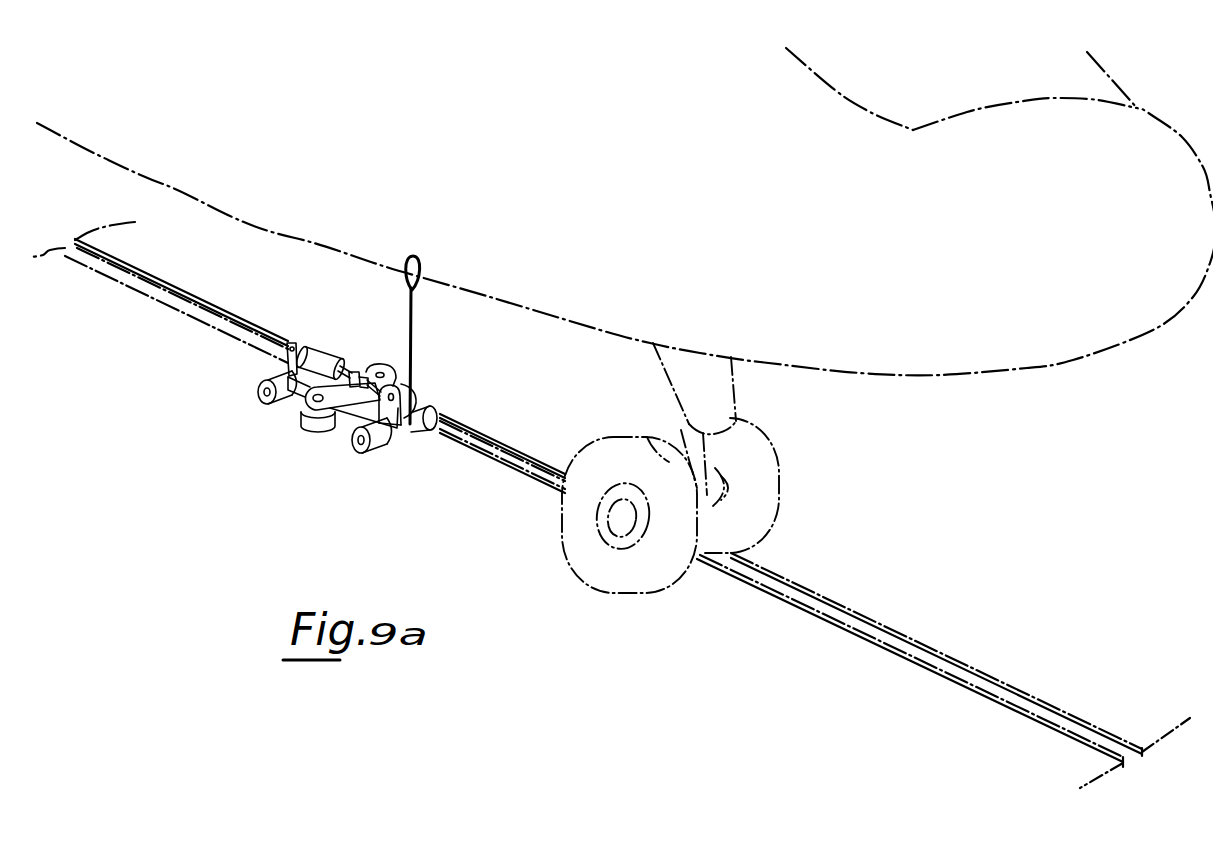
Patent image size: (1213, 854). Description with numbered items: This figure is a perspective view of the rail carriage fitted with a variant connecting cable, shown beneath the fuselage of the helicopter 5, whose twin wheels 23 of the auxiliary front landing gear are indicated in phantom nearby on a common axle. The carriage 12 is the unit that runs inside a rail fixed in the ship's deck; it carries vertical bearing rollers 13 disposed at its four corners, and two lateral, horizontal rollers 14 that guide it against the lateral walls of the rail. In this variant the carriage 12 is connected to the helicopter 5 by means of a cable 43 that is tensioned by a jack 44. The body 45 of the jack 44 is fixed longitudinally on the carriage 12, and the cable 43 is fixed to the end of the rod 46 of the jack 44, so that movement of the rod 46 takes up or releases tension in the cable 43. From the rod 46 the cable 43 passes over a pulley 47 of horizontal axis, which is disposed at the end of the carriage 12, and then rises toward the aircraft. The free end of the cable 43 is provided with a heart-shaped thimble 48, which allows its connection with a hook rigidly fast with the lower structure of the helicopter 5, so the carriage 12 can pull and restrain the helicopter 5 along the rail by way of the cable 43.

The helicopter 5 is at (880, 377).
The carriage 12 is at (352, 417).
The vertical bearing rollers 13 is at (263, 405).
The lateral horizontal rollers 14 is at (310, 426).
The twin wheels 23 is at (653, 425).
The cable 43 is at (415, 323).
The jack 44 is at (349, 363).
The body of the jack 45 is at (300, 346).
The rod of the jack 46 is at (361, 372).
The pulley 47 is at (399, 410).
The heart-shaped thimble 48 is at (420, 260).